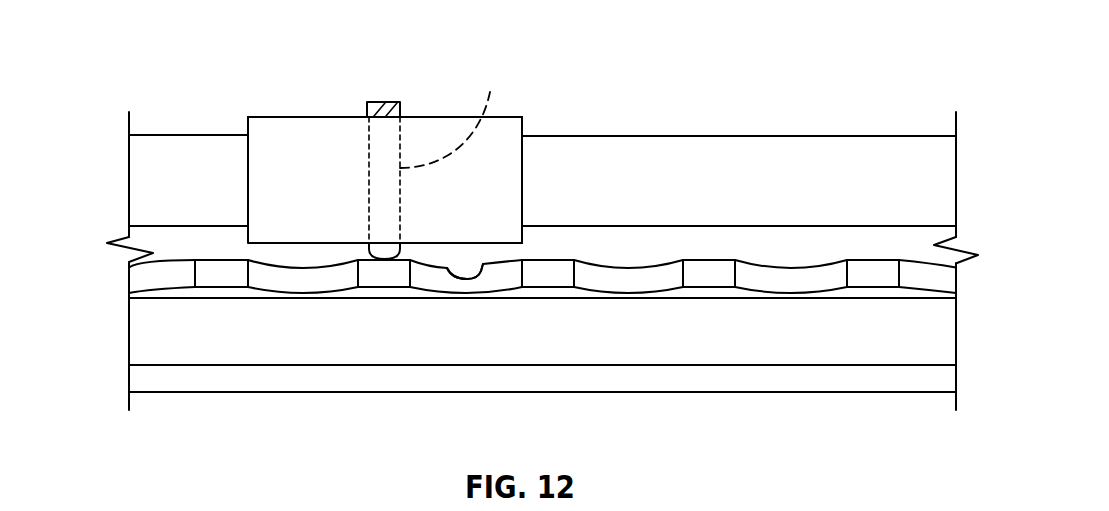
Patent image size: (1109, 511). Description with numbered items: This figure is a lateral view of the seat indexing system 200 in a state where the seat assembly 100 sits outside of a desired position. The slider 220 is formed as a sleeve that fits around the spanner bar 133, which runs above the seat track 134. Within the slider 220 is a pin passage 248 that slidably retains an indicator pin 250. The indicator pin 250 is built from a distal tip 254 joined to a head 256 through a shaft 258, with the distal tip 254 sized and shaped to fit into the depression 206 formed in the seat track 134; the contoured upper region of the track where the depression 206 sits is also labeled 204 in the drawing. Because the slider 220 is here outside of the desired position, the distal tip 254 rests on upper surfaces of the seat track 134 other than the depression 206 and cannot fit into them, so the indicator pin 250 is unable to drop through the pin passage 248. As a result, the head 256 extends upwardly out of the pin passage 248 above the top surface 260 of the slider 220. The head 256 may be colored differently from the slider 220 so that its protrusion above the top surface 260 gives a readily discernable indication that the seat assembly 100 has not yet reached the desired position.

The seat assembly 100 is at (167, 136).
The spanner bar 133 is at (210, 133).
The seat track 134 is at (610, 345).
The seat indexing system 200 is at (209, 42).
The patterned surface 204 is at (455, 277).
The depression 206 is at (468, 273).
The slider 220 is at (522, 130).
The pin passage 248 is at (368, 157).
The indicator pin 250 is at (402, 108).
The distal tip 254 is at (370, 248).
The head 256 is at (380, 102).
The shaft 258 is at (457, 116).
The top surface 260 is at (267, 117).